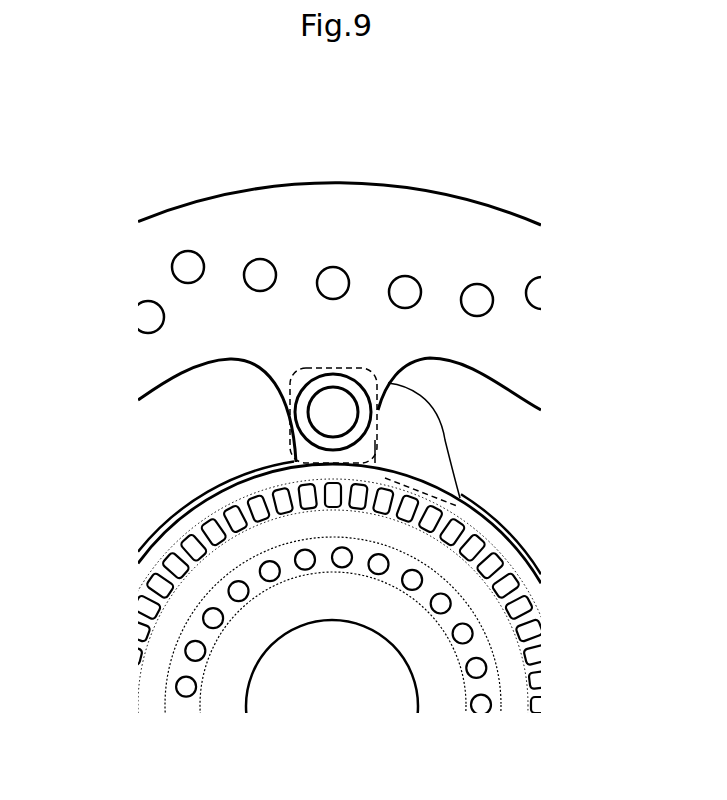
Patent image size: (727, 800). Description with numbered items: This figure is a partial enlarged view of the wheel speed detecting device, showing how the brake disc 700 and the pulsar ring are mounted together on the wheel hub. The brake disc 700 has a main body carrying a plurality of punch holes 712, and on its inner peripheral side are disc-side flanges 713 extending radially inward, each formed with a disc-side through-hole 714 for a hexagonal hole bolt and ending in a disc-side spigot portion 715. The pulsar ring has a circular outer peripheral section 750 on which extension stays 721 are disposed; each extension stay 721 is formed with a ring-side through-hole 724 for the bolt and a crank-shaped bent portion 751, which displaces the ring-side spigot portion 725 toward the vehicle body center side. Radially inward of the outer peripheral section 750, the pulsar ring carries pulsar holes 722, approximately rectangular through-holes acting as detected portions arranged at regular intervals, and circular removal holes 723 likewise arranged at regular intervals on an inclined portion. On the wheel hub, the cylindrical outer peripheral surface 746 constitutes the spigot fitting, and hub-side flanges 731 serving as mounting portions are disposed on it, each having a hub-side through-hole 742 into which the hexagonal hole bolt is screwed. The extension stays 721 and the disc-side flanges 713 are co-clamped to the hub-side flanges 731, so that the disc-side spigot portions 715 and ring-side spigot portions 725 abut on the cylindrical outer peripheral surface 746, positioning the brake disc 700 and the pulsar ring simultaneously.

The brake disc 700 is at (396, 205).
The punch holes 712 is at (405, 290).
The disc-side flanges 713 is at (418, 415).
The disc-side through-holes 714 is at (325, 410).
The ring-side through-hole 724 is at (293, 279).
The hub-side through-holes 742 is at (293, 279).
The cylindrical outer peripheral surface 746 is at (288, 462).
The hub-side flanges 731 is at (312, 503).
The disc-side spigot portions 715 is at (332, 470).
The ring-side spigot portion 725 is at (320, 513).
The outer peripheral section 750 is at (151, 547).
The bent portion 751 is at (423, 456).
The extension stays 721 is at (420, 413).
The pulsar holes 722 is at (497, 570).
The removal holes 723 is at (463, 632).